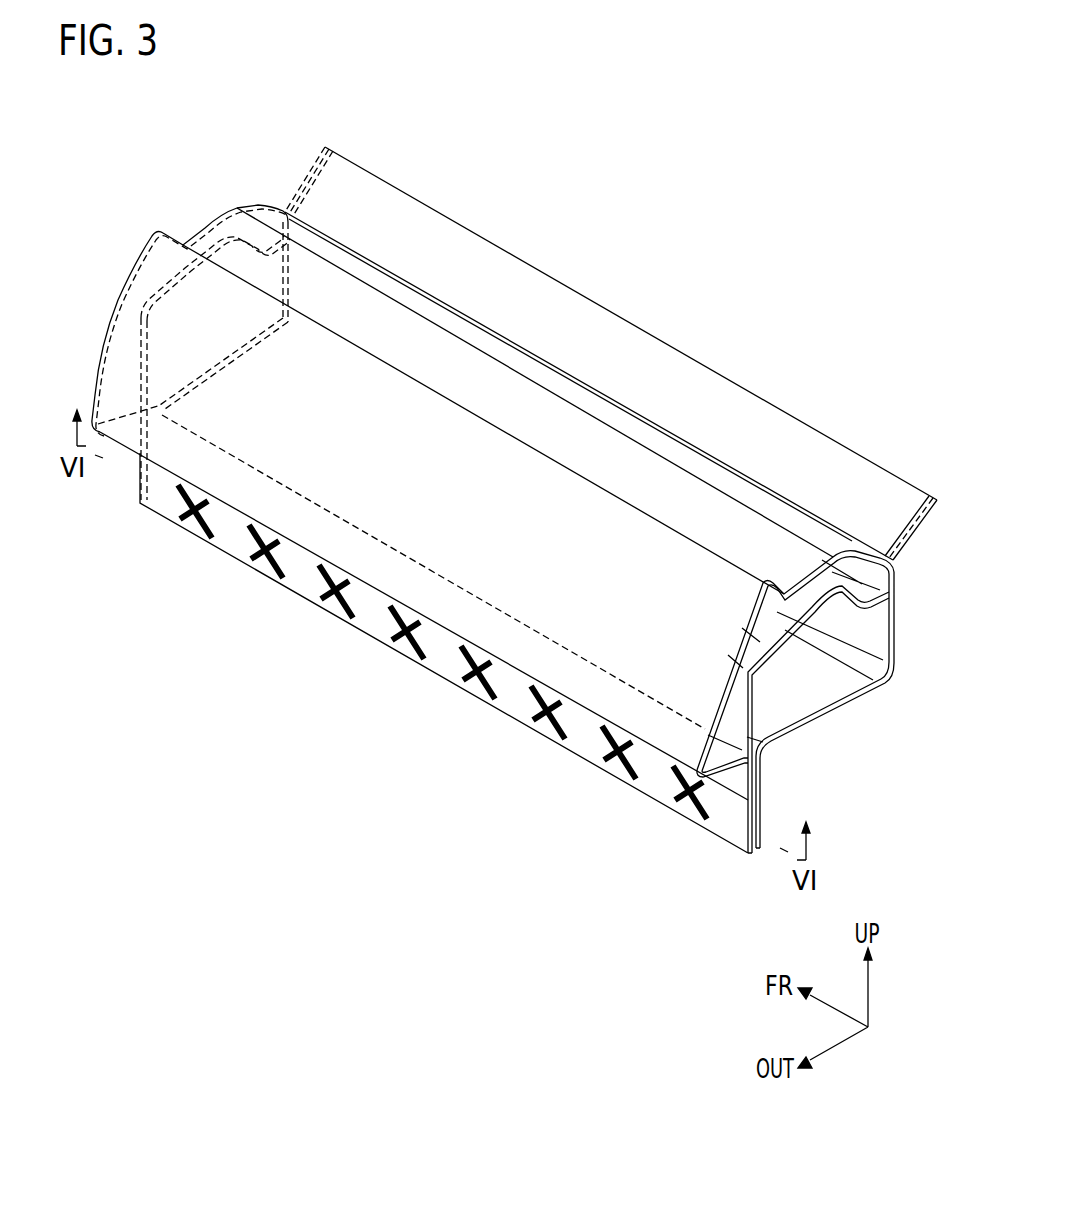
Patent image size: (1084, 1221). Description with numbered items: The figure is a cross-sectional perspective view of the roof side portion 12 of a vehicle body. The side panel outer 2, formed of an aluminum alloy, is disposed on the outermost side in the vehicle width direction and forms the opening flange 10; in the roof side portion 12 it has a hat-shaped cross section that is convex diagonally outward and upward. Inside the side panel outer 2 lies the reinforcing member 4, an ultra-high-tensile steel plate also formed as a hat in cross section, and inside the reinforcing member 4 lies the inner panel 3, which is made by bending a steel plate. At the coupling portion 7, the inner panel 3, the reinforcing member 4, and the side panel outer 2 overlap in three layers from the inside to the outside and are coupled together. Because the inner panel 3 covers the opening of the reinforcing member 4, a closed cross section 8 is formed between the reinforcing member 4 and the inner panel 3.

The opening flange 10 is at (514, 500).
The side panel outer 2 is at (660, 567).
The inner panel 3 is at (797, 712).
The reinforcing member 4 is at (780, 612).
The coupling portion 7 is at (596, 345).
The closed cross section 8 is at (822, 677).
The roof side portion 12 is at (315, 380).